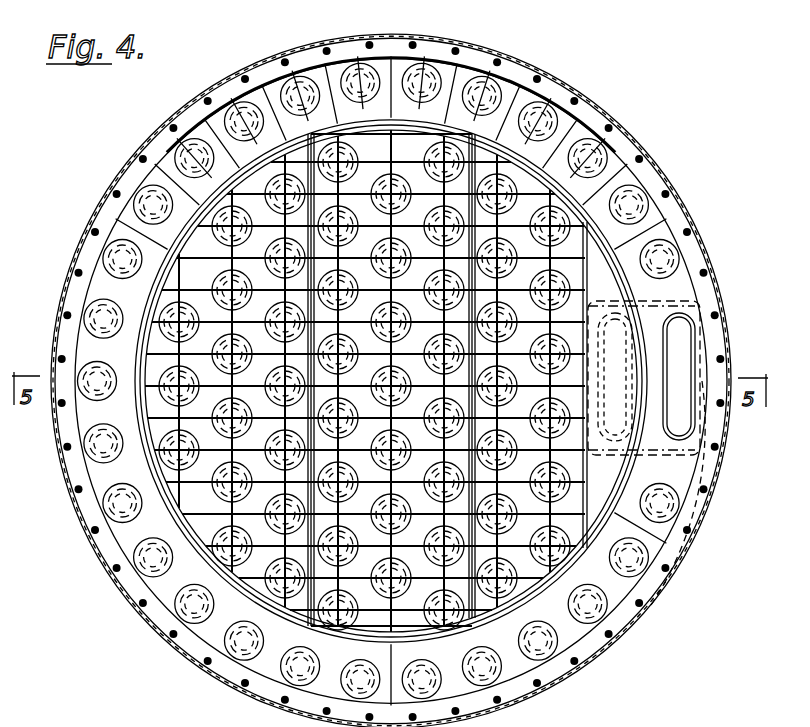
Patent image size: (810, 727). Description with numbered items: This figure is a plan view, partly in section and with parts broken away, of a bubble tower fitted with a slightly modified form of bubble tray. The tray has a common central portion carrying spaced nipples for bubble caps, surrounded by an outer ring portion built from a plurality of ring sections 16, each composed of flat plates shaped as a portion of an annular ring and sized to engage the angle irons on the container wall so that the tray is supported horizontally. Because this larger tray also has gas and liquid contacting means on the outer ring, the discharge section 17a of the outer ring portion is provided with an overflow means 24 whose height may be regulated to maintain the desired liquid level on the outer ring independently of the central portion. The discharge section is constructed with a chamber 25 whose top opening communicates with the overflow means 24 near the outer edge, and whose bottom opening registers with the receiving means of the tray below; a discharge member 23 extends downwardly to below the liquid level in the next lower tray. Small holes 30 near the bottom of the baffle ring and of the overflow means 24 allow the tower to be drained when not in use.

The ring section 16 is at (122, 213).
The discharge section 17a is at (682, 475).
The discharge member 23 is at (627, 455).
The overflow means 24 is at (692, 333).
The chamber 25 is at (665, 302).
The small holes 30 is at (130, 378).